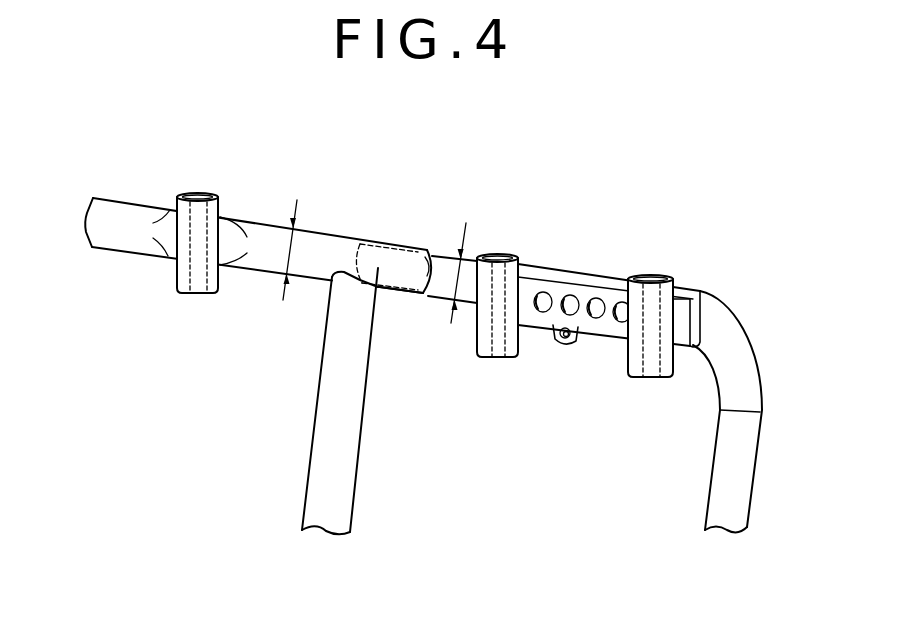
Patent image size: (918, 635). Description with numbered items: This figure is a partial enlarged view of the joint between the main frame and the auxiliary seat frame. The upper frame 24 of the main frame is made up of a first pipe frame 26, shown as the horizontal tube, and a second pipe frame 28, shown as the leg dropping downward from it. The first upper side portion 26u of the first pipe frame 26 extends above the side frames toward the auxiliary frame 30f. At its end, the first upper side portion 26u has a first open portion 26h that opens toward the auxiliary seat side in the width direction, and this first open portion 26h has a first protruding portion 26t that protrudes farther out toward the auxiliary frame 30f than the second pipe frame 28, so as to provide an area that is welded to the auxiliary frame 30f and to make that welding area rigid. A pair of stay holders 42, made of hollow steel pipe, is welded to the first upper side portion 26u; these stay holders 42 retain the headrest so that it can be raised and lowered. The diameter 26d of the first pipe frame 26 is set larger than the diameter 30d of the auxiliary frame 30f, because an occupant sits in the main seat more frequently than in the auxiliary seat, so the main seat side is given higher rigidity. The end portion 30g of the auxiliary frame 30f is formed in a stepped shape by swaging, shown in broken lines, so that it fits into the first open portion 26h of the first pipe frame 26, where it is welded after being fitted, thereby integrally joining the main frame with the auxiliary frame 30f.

The upper frame 24 is at (258, 319).
The first pipe frame 26 is at (113, 197).
The first upper side portion 26u is at (117, 238).
The diameter of the first pipe frame 26d is at (290, 250).
The first open portion 26h is at (423, 247).
The first protruding portion 26t is at (398, 270).
The second pipe frame 28 is at (308, 460).
The diameter of the auxiliary frame 30d is at (450, 262).
The auxiliary frame 30f is at (737, 314).
The end portion 30g is at (373, 292).
The stay holder 42 is at (200, 212).